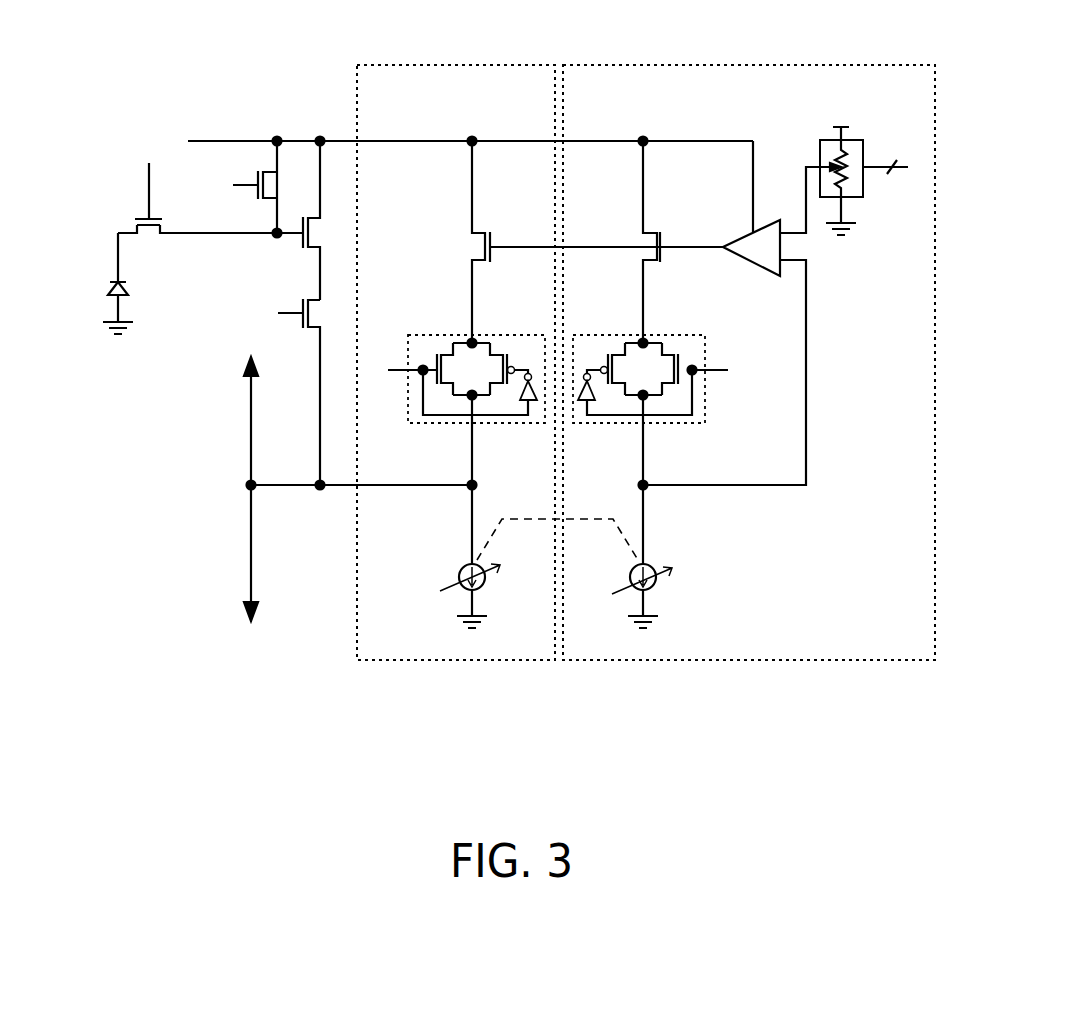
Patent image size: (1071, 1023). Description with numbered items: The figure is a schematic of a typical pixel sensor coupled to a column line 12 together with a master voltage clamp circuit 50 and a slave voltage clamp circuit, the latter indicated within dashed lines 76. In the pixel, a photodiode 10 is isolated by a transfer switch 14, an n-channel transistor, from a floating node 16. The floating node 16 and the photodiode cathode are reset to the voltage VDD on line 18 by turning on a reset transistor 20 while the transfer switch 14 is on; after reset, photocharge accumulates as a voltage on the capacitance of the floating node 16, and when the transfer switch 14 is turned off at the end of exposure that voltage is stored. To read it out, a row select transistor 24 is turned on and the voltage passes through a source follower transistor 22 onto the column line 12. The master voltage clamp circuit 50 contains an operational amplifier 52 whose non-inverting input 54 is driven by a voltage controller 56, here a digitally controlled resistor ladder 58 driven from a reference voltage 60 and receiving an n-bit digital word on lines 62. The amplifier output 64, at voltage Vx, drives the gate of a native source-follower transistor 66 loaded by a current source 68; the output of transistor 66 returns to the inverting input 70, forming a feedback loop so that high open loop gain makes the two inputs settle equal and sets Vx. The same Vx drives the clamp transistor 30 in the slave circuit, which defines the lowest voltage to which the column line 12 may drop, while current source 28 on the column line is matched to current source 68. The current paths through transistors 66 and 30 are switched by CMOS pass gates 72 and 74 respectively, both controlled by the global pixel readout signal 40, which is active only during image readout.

The photodiode 10 is at (125, 291).
The column line 12 is at (251, 555).
The transfer switch 14 is at (140, 215).
The floating node 16 is at (235, 236).
The VDD line 18 is at (405, 143).
The reset transistor 20 is at (258, 175).
The source follower transistor 22 is at (312, 215).
The row select transistor 24 is at (301, 340).
The current source 28 is at (458, 577).
The clamp transistor 30 is at (470, 243).
The global pixel readout signal (GPR) 40 is at (395, 378).
The master voltage clamp circuit 50 is at (770, 65).
The operational amplifier 52 is at (755, 265).
The non-inverting input 54 is at (790, 232).
The voltage controller 56 is at (862, 197).
The digitally controlled resistor ladder 58 is at (838, 158).
The reference voltage 60 is at (843, 104).
The lines 62 is at (890, 140).
The output 64 is at (708, 250).
The source-follower transistor 66 is at (653, 230).
The current source 68 is at (660, 580).
The inverting input 70 is at (795, 265).
The CMOS pass gate 72 is at (618, 425).
The CMOS pass gate 74 is at (520, 425).
The slave voltage clamp circuit 76 is at (485, 65).